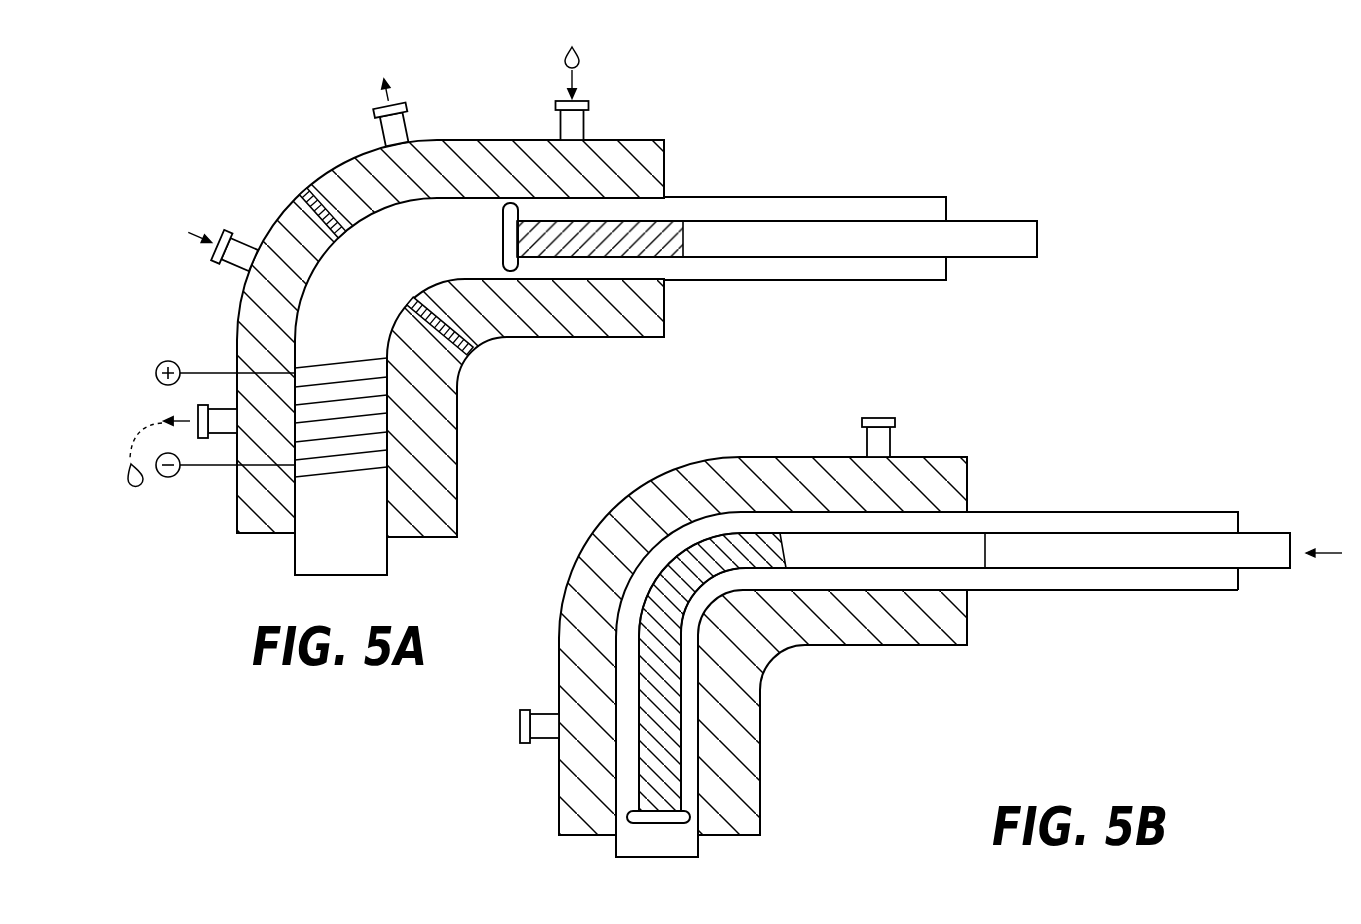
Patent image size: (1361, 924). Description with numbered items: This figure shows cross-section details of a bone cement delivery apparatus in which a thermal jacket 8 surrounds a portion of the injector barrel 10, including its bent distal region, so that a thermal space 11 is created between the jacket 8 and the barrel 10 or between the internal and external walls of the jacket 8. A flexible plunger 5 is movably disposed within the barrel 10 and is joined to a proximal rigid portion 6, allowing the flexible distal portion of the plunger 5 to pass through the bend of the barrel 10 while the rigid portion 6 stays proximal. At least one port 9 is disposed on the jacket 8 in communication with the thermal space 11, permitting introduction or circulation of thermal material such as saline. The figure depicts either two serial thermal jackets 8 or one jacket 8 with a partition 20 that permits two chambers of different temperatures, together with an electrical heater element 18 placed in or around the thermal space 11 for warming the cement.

In FIG. 5A, the plunger 5 is at (613, 252).
In FIG. 5B, the plunger 5 is at (667, 712).
In FIG. 5A, the proximal rigid portion 6 is at (840, 262).
In FIG. 5B, the proximal rigid portion 6 is at (1138, 557).
In FIG. 5A, the thermal jacket 8 is at (578, 327).
In FIG. 5B, the thermal jacket 8 is at (559, 641).
In FIG. 5A, the port 9 is at (232, 264).
In FIG. 5B, the port 9 is at (530, 743).
In FIG. 5A, the injector barrel 10 is at (910, 262).
In FIG. 5B, the injector barrel 10 is at (1165, 517).
In FIG. 5B, the thermal space 11 is at (922, 620).
In FIG. 5A, the electrical element 18 is at (168, 361).
In FIG. 5A, the partition 20 is at (290, 176).